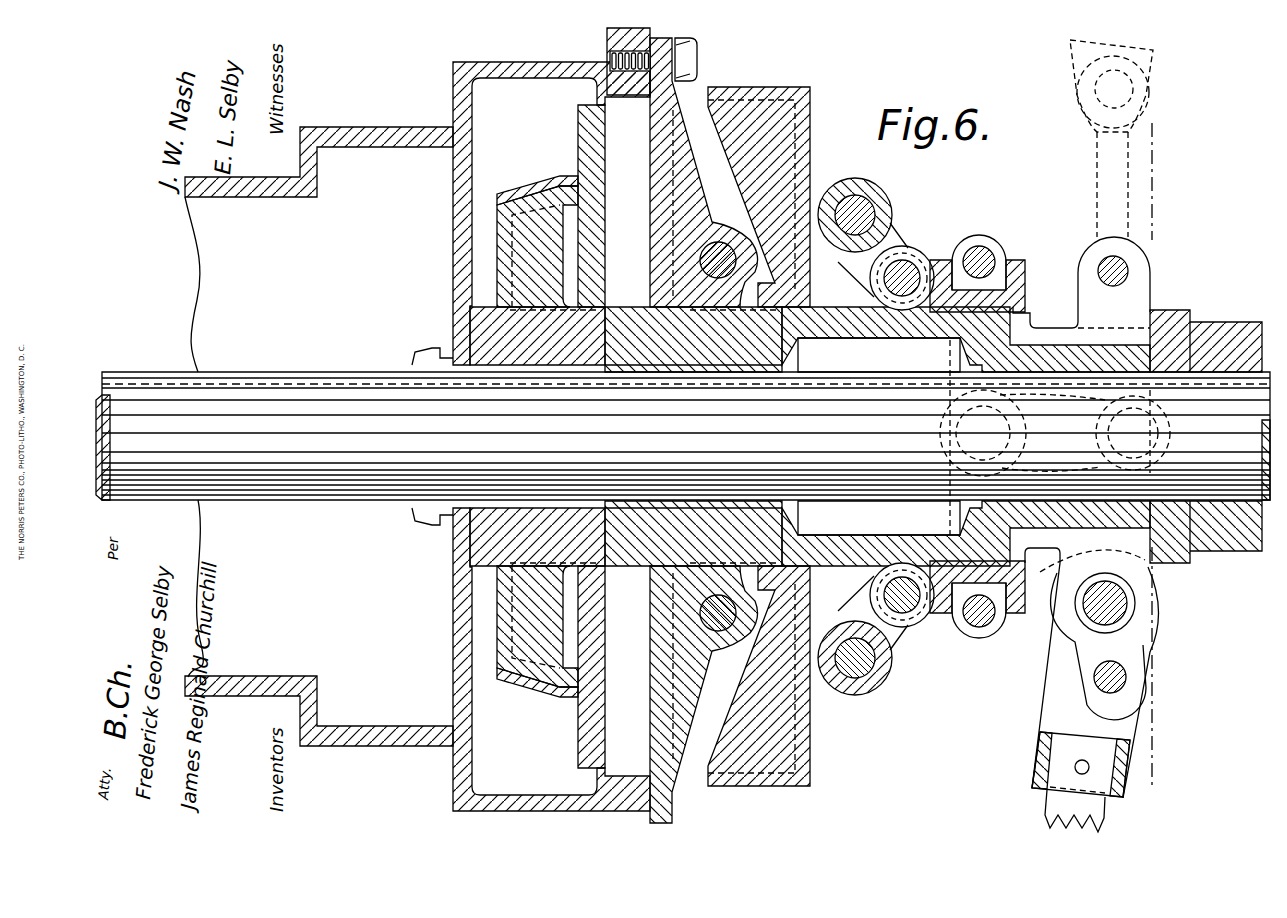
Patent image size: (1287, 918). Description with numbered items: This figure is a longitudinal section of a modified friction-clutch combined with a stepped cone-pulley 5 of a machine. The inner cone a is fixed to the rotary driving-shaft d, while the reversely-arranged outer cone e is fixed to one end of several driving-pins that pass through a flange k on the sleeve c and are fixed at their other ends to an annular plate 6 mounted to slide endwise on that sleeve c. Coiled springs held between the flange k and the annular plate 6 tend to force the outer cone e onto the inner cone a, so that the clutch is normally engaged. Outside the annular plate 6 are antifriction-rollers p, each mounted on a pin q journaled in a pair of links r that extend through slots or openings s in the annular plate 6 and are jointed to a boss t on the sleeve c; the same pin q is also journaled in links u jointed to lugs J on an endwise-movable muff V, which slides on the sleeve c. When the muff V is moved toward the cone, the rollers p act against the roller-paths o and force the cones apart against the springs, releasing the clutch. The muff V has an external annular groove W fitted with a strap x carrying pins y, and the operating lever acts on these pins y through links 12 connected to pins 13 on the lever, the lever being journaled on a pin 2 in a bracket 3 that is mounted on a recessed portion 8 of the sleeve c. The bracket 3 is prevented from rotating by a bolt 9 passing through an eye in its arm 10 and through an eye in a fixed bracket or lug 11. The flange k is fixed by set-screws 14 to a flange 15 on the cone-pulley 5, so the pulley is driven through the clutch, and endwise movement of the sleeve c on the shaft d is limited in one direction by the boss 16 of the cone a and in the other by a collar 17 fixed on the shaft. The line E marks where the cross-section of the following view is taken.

The pin 2 is at (1092, 690).
The bracket 3 is at (1050, 312).
The stepped cone-pulley 5 is at (417, 436).
The annular plate 6 is at (769, 436).
The recessed portion 8 is at (1108, 330).
The bolt 9 is at (1125, 92).
The arm 10 is at (1097, 168).
The fixed bracket or lug 11 is at (1111, 85).
The links 12 is at (1052, 432).
The pins 13 is at (1133, 431).
The set-screws 14 is at (692, 62).
The flange 15 is at (606, 36).
The boss 16 is at (508, 436).
The collar 17 is at (1228, 548).
The inner cone a is at (544, 436).
The sleeve c is at (830, 436).
The rotary driving-shaft d is at (683, 436).
The outer cone e is at (548, 191).
The ring f is at (599, 436).
The flange k is at (660, 165).
The links r is at (745, 232).
The boss t is at (735, 307).
The slots or openings s is at (812, 150).
The roller-paths o is at (810, 175).
The antifriction-rollers p is at (868, 200).
The pin q is at (875, 218).
The links u is at (897, 424).
The lugs J is at (872, 290).
The strap x is at (979, 243).
The external annular groove W is at (993, 288).
The muff V is at (1022, 262).
The pins y is at (983, 433).
The section line E is at (1162, 454).